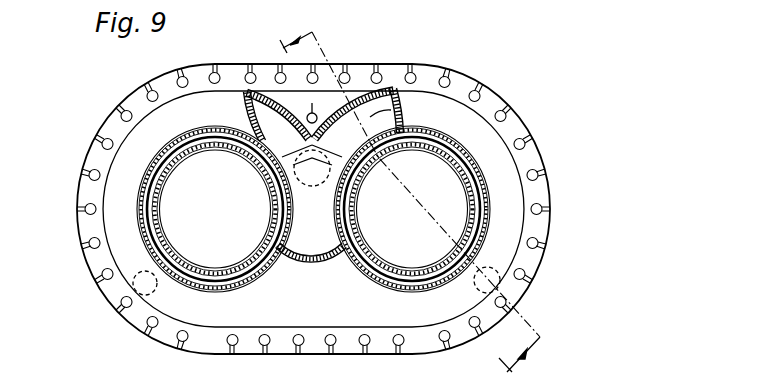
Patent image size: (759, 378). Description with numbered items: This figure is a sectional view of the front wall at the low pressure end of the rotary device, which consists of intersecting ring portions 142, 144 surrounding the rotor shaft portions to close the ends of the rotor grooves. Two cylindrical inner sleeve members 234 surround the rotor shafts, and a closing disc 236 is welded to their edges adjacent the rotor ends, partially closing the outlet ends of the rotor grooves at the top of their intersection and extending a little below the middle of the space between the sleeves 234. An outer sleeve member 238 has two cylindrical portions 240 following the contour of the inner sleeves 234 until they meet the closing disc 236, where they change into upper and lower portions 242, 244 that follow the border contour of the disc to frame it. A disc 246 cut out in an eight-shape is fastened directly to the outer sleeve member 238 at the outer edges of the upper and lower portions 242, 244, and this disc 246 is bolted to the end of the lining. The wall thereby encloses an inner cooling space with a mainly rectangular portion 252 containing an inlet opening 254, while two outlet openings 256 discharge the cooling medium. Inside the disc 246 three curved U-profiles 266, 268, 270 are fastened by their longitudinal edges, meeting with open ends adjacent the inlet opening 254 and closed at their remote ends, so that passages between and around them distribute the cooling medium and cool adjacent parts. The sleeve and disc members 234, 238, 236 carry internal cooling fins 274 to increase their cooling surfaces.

The ring portion 142 is at (122, 202).
The ring portion 144 is at (538, 239).
The inner sleeve member 234 is at (160, 236).
The closing disc 236 is at (396, 97).
The outer sleeve member 238 is at (552, 203).
The cylindrical portion 240 is at (167, 145).
The upper portion 242 is at (312, 103).
The lower portion 244 is at (297, 255).
The disc 246 is at (493, 266).
The rectangular portion 252 is at (405, 95).
The inlet opening 254 is at (408, 118).
The outlet opening 256 is at (138, 292).
The U-profile 266 is at (277, 160).
The U-profile 268 is at (375, 158).
The U-profile 270 is at (287, 197).
The cooling fin 274 is at (384, 262).